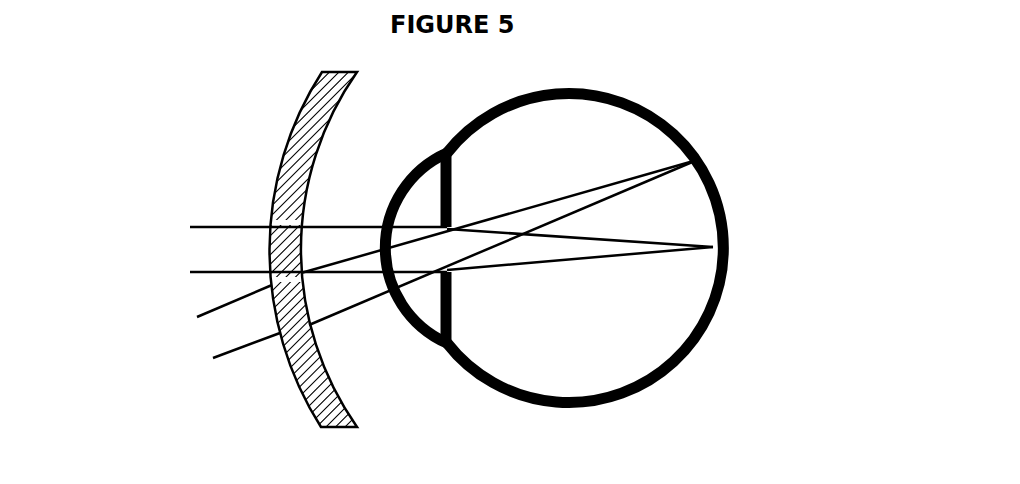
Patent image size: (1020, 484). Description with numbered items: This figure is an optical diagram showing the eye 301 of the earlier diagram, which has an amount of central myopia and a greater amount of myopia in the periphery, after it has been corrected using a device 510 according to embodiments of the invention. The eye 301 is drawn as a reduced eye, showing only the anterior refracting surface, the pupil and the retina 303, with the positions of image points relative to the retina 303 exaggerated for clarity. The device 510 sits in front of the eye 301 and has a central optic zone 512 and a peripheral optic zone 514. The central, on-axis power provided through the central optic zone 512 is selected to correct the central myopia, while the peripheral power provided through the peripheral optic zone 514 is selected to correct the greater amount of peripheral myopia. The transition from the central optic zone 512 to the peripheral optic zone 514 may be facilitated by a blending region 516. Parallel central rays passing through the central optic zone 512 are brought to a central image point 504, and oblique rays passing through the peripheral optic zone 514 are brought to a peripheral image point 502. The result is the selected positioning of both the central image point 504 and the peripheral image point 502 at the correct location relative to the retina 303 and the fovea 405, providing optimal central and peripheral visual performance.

The device 510 is at (283, 115).
The blending region 516 is at (297, 212).
The central optic zone 512 is at (270, 238).
The peripheral optic zone 514 is at (286, 341).
The eye 301 is at (579, 228).
The peripheral image point 502 is at (713, 150).
The retina 303 is at (732, 185).
The central image point 504 is at (699, 265).
The fovea 405 is at (742, 262).